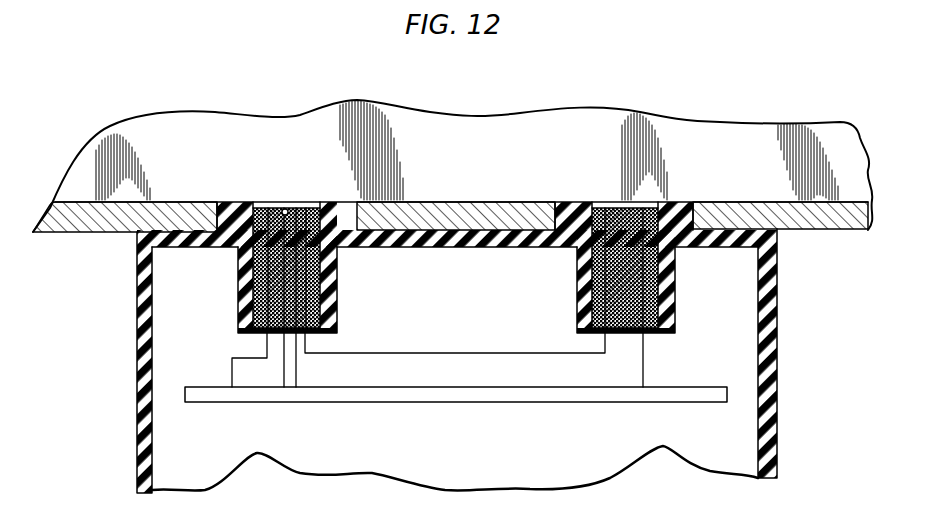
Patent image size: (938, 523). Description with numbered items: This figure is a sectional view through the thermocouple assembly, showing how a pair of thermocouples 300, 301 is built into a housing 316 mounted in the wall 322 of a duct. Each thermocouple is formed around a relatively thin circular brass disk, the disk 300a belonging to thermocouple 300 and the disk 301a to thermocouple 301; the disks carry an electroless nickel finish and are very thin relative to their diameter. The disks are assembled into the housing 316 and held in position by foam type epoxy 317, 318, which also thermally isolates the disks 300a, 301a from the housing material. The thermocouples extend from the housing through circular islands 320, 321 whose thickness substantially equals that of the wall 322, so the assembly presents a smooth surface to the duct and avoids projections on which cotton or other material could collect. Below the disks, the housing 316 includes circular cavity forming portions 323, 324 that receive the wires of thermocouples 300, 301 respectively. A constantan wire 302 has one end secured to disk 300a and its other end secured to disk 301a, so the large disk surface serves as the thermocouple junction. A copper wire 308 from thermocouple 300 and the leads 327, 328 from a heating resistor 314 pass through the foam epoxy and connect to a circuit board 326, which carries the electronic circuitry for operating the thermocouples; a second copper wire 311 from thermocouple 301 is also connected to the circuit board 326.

The thermocouple 300 is at (313, 200).
The circular disk 300a is at (262, 205).
The thermocouple 301 is at (640, 198).
The circular disk 301a is at (610, 202).
The constantan wire 302 is at (398, 352).
The copper wire 308 is at (232, 370).
The copper wire 311 is at (643, 365).
The heating resistor 314 is at (290, 204).
The housing 316 is at (137, 300).
The foam type epoxy 317 is at (256, 204).
The foam type epoxy 318 is at (578, 202).
The circular island 320 is at (213, 203).
The circular island 321 is at (558, 202).
The wall 322 is at (764, 212).
The circular cavity forming portion 323 is at (248, 302).
The circular cavity forming portion 324 is at (595, 300).
The circuit board 326 is at (462, 403).
The lead 327 is at (283, 370).
The lead 328 is at (297, 370).